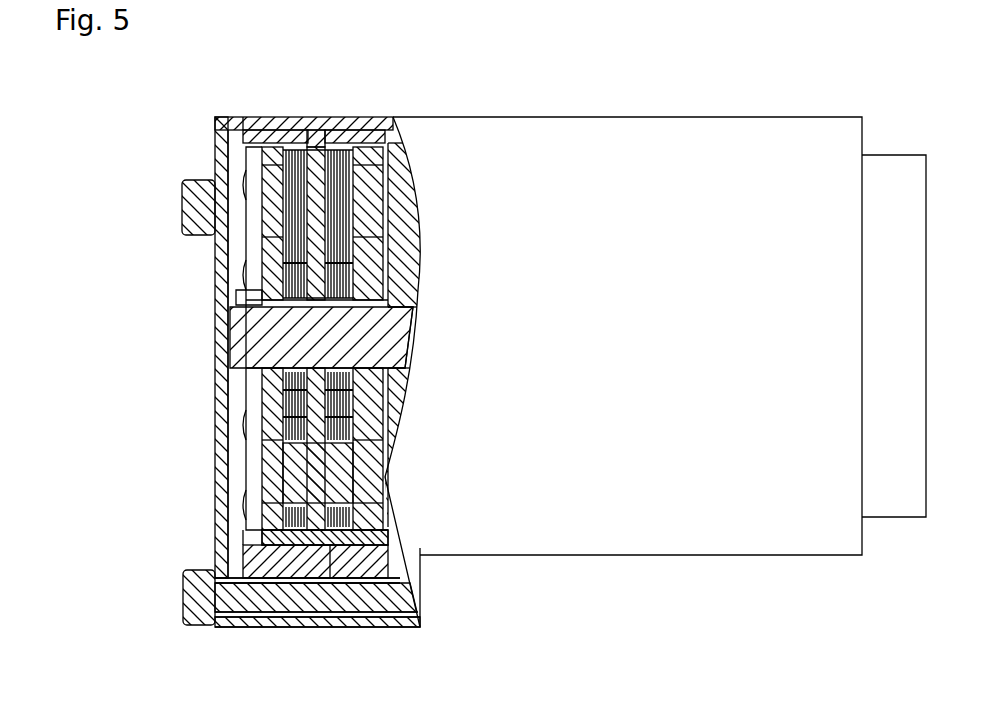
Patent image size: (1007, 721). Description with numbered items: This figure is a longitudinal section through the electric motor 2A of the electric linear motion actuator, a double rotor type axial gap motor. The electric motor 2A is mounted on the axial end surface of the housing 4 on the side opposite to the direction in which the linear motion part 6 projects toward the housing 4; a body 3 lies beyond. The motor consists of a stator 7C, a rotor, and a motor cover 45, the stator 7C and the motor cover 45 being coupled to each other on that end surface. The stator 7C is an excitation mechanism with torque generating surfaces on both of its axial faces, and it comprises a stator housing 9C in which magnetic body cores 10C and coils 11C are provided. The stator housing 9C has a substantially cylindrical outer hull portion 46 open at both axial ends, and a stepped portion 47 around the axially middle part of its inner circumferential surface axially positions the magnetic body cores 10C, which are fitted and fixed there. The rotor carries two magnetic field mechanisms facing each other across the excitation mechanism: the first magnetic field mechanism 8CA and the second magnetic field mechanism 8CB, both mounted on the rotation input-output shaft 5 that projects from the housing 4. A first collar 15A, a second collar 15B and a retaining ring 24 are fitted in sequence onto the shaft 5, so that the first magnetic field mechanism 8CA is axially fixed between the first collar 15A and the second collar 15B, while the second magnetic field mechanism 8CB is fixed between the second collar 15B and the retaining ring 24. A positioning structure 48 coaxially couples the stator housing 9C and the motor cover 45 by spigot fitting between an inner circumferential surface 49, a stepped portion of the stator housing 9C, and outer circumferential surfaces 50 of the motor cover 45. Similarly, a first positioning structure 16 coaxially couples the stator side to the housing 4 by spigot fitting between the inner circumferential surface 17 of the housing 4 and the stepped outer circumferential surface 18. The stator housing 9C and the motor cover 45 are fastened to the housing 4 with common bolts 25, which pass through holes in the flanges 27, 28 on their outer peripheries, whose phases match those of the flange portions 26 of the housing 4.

The electric motor 2A is at (323, 110).
The vehicle body 3 is at (900, 520).
The housing 4 is at (650, 545).
The rotation input-output shaft 5 is at (218, 375).
The linear motion part 6 is at (906, 342).
The stator 7C is at (287, 118).
The first magnetic field mechanism 8CA is at (380, 180).
The second magnetic field mechanism 8CB is at (246, 170).
The stator housing 9C is at (310, 620).
The magnetic body cores 10C is at (337, 478).
The coils 11C is at (330, 548).
The first collar 15A is at (405, 300).
The second collar 15B is at (360, 262).
The first positioning structure 16 is at (503, 3).
The inner circumferential surface 17 is at (405, 135).
The outer circumferential surface 18 is at (393, 118).
The retaining ring 24 is at (240, 297).
The bolts 25 is at (193, 208).
The flange portions 26 is at (397, 617).
The flange 27 is at (262, 622).
The flange 28 is at (227, 623).
The motor cover 45 is at (218, 342).
The outer hull portion 46 is at (370, 118).
The stepped portion 47 is at (318, 550).
The positioning structure 48 is at (114, 478).
The inner circumferential surface 49 is at (250, 525).
The outer circumferential surfaces 50 is at (242, 580).